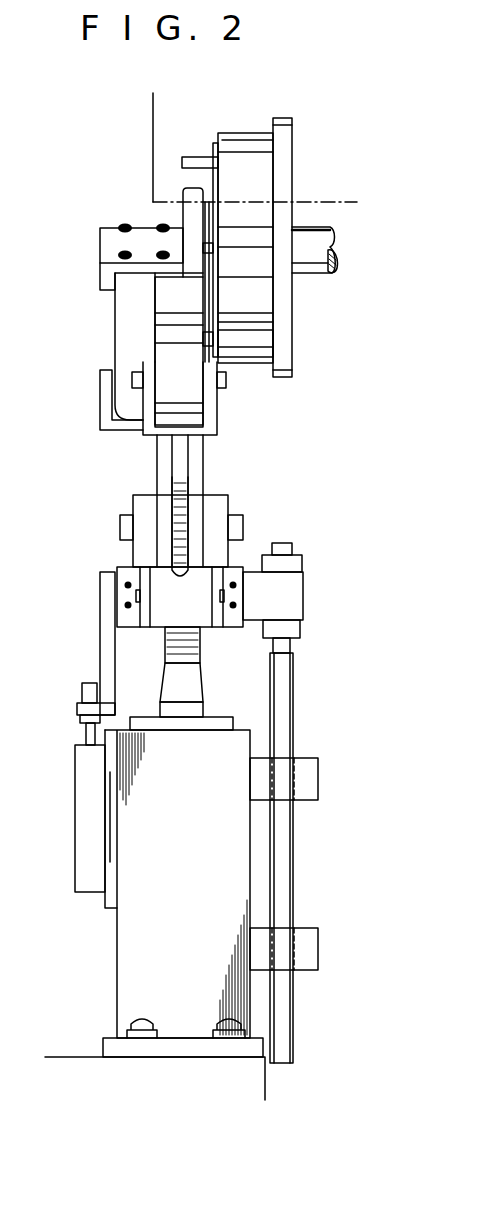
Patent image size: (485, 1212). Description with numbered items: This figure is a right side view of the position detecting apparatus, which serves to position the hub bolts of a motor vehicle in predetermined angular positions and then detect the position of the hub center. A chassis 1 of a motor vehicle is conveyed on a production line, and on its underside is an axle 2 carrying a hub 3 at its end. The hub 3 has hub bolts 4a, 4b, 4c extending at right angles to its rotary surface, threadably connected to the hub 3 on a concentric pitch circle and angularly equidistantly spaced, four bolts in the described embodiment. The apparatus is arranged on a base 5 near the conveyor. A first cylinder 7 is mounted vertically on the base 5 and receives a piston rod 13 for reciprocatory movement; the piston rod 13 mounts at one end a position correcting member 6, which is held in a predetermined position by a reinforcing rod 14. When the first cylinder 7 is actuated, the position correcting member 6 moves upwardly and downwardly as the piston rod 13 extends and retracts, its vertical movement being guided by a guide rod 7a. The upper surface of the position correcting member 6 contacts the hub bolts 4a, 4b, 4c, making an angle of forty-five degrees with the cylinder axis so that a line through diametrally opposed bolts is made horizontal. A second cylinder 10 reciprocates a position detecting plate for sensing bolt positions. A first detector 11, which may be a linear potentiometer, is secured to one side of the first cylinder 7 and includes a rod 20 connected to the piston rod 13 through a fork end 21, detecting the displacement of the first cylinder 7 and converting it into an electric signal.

The chassis 1 is at (150, 122).
The axle 2 is at (318, 277).
The hub 3 is at (233, 367).
The hub bolt 4a is at (207, 330).
The hub bolt 4b is at (207, 240).
The hub bolt 4c is at (205, 158).
The base 5 is at (68, 1056).
The position correcting member 6 is at (155, 287).
The first cylinder 7 is at (117, 925).
The guide rod 7a is at (297, 712).
The second cylinder 10 is at (115, 313).
The first detector 11 is at (75, 825).
The piston rod 13 is at (200, 690).
The reinforcing rod 14 is at (172, 452).
The rod 20 is at (83, 740).
The fork end 21 is at (100, 622).